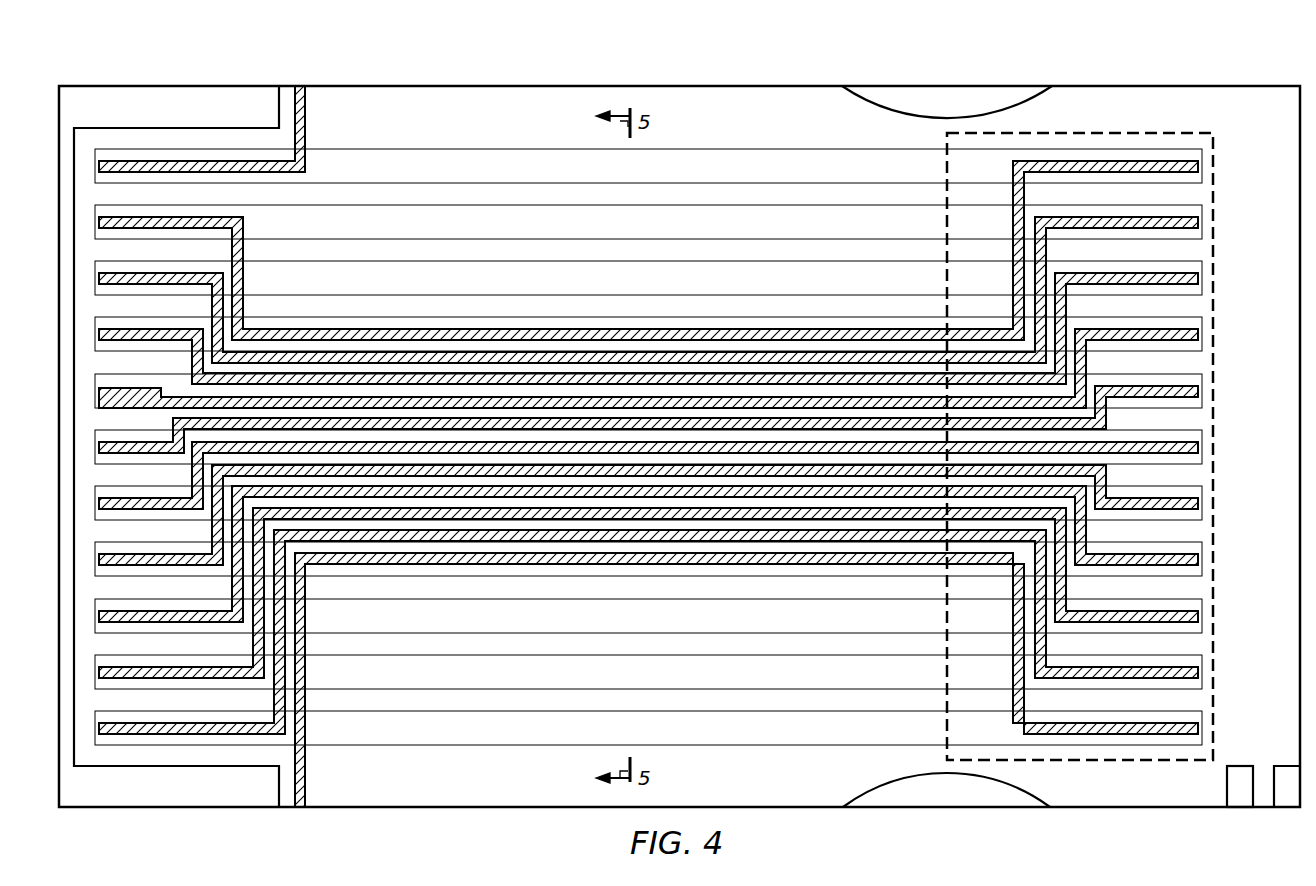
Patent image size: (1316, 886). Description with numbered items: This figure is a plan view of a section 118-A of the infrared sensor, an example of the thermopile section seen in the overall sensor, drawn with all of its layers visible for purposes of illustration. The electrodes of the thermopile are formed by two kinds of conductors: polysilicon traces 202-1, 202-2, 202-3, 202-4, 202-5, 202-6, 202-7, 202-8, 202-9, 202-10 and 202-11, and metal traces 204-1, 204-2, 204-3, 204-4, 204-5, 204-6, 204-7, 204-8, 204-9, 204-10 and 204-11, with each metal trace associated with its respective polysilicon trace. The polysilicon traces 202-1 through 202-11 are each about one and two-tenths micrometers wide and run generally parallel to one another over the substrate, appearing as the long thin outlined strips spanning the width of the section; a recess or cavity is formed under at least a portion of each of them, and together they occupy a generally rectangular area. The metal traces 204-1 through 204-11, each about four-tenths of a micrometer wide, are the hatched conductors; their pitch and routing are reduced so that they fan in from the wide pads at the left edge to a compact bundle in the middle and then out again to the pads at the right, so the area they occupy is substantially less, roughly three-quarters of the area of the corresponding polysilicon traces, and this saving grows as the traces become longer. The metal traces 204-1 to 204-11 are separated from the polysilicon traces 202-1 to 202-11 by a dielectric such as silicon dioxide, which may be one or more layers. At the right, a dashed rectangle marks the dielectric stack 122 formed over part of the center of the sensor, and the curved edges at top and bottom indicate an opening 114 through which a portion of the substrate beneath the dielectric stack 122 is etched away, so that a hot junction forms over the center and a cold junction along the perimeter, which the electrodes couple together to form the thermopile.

The section 118-A is at (437, 69).
The opening 114 is at (862, 798).
The dielectric stack 122 is at (1068, 133).
The polysilicon trace 202-1 is at (758, 152).
The polysilicon trace 202-2 is at (1192, 195).
The polysilicon trace 202-3 is at (1192, 252).
The polysilicon trace 202-4 is at (1192, 308).
The polysilicon trace 202-5 is at (1192, 364).
The polysilicon trace 202-6 is at (1192, 420).
The polysilicon trace 202-7 is at (1192, 530).
The polysilicon trace 202-8 is at (1192, 589).
The polysilicon trace 202-9 is at (1192, 646).
The polysilicon trace 202-10 is at (1192, 702).
The polysilicon trace 202-11 is at (454, 741).
The metal trace 204-1 is at (1199, 166).
The metal trace 204-2 is at (1199, 223).
The metal trace 204-3 is at (1199, 279).
The metal trace 204-4 is at (1199, 336).
The metal trace 204-5 is at (1199, 392).
The metal trace 204-6 is at (1199, 450).
The metal trace 204-7 is at (1199, 506).
The metal trace 204-8 is at (1199, 562).
The metal trace 204-9 is at (1199, 619).
The metal trace 204-10 is at (1199, 675).
The metal trace 204-11 is at (1199, 731).